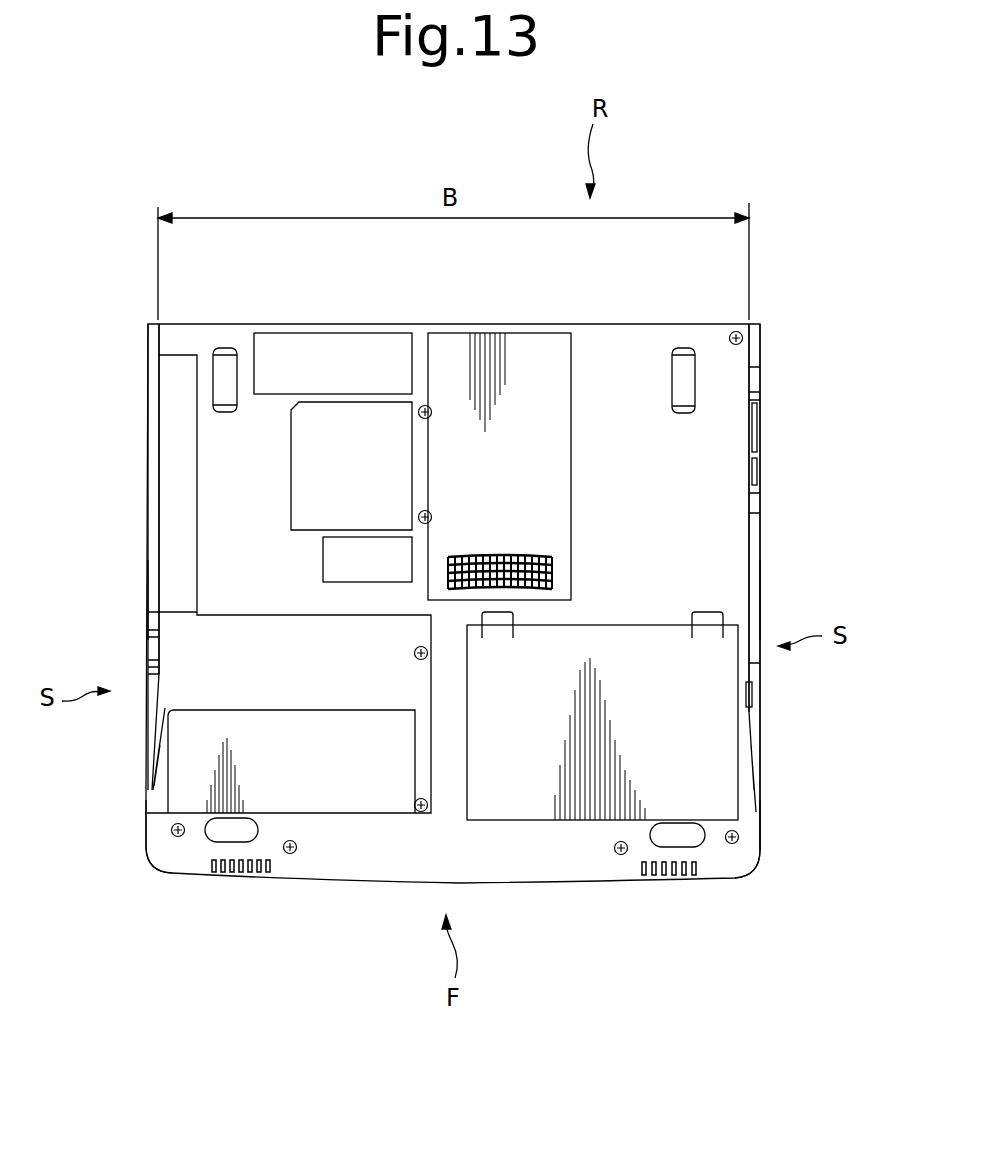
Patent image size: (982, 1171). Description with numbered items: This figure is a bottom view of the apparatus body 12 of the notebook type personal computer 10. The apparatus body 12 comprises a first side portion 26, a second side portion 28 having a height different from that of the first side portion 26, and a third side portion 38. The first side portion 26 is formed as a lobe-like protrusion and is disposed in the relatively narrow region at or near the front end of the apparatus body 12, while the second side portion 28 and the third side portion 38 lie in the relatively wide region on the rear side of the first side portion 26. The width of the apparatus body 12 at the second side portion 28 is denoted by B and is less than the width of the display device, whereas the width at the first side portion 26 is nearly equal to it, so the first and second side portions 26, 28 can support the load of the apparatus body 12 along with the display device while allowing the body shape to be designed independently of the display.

The notebook type personal computer 10 is at (777, 227).
The apparatus body 12 is at (670, 324).
The first side portion 26 is at (146, 830).
The second side portion 28 is at (158, 560).
The third side portion 38 is at (148, 590).